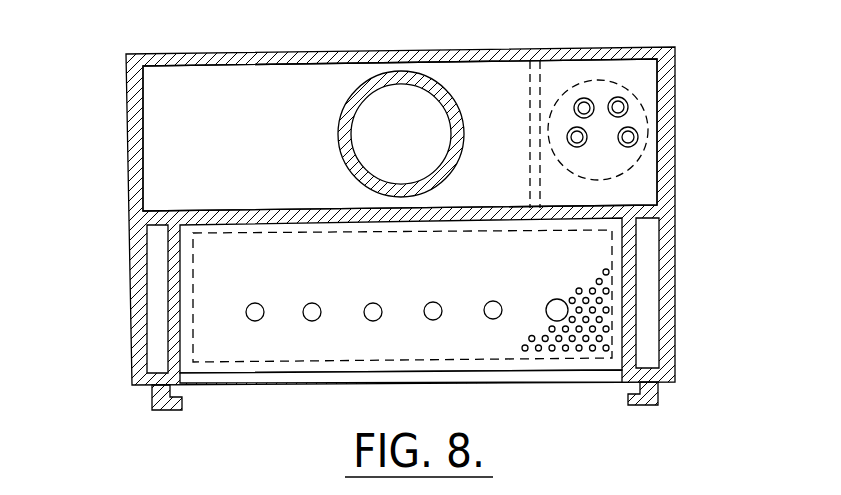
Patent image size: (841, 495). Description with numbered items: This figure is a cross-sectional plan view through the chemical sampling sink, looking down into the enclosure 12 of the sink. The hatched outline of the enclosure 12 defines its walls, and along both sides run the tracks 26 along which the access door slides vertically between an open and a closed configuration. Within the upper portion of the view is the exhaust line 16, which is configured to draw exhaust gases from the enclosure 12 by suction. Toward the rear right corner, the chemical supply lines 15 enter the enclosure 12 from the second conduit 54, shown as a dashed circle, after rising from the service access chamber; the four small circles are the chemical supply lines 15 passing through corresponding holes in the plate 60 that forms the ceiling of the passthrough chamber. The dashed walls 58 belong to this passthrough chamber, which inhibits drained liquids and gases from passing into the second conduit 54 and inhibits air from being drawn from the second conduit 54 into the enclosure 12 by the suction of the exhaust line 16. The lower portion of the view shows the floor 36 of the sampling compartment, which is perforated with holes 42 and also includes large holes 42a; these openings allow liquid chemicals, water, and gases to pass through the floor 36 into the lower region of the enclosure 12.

The enclosure 12 is at (366, 216).
The chemical supply lines 15 is at (592, 101).
The exhaust line 16 is at (369, 108).
The tracks 26 is at (160, 412).
The floor 36 is at (402, 326).
The holes 42 is at (560, 362).
The large holes 42a is at (255, 321).
The second conduit 54 is at (597, 82).
The walls 58 is at (503, 134).
The plate 60 is at (400, 115).